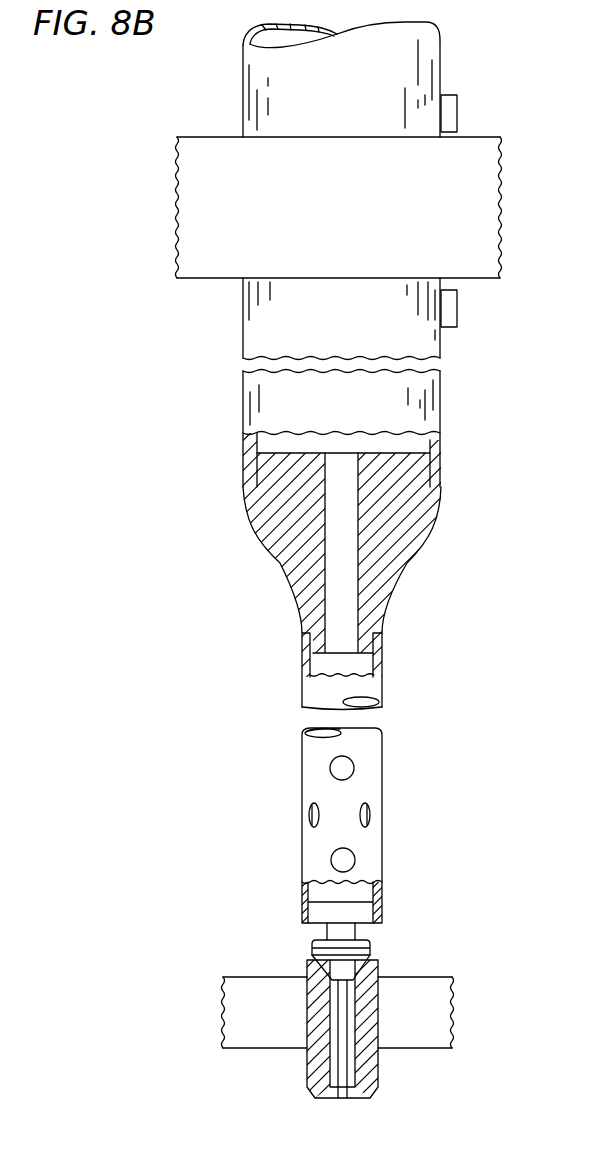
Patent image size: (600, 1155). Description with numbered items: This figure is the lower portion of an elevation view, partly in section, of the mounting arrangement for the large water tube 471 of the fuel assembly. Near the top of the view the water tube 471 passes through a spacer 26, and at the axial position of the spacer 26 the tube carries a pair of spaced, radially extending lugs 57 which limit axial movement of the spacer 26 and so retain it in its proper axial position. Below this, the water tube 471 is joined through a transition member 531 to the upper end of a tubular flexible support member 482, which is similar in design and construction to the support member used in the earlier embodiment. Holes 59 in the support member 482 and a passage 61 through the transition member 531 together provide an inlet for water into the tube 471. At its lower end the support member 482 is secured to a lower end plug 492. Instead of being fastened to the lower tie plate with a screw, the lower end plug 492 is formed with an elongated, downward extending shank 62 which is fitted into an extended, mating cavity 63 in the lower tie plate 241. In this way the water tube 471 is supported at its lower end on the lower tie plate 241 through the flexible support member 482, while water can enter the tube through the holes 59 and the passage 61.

The large water tube 471 is at (243, 96).
The lug 57 is at (457, 108).
The spacer 26 is at (500, 232).
The passage 61 is at (337, 584).
The transition member 531 is at (410, 560).
The hole 59 is at (340, 768).
The tubular flexible support member 482 is at (382, 792).
The lower end plug 492 is at (370, 945).
The lower tie plate 241 is at (453, 1013).
The shank 62 is at (349, 1073).
The cavity 63 is at (343, 1090).